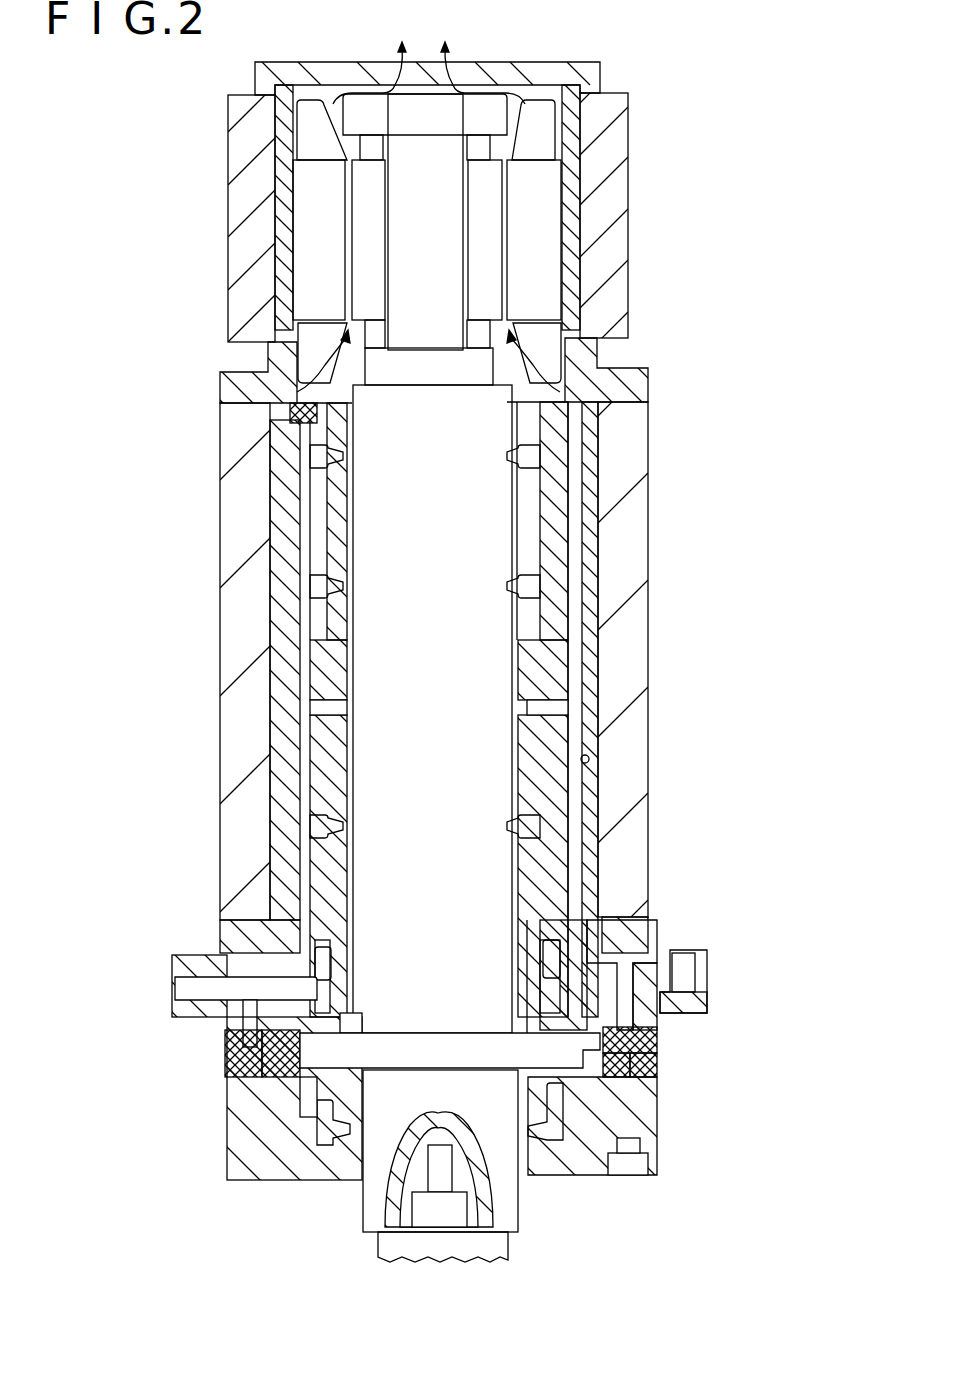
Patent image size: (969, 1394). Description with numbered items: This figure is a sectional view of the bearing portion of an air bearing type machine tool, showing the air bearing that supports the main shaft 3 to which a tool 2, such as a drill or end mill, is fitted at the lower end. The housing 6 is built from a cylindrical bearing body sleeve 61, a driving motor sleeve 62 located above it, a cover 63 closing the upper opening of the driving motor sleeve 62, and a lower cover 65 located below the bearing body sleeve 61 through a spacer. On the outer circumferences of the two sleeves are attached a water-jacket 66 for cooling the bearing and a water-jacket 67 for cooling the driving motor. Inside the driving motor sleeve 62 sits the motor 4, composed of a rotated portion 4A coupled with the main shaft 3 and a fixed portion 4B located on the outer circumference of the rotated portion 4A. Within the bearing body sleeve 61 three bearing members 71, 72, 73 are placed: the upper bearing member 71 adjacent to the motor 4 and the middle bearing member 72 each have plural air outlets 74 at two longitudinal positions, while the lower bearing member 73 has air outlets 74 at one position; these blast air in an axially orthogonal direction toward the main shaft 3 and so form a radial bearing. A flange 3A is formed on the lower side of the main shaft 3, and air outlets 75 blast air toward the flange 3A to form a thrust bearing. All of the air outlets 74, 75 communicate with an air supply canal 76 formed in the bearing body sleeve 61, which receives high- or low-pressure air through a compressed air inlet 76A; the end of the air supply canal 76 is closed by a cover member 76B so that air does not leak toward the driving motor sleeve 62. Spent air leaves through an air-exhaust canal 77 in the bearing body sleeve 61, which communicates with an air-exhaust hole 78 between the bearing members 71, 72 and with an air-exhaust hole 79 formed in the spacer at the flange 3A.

The tool 2 is at (500, 1245).
The main shaft 3 is at (372, 1210).
The flange 3A is at (437, 1040).
The motor 4 is at (520, 239).
The rotated portion 4A is at (492, 225).
The fixed portion 4B is at (548, 143).
The housing 6 is at (708, 968).
The bearing body sleeve 61 is at (592, 672).
The driving motor sleeve 62 is at (612, 378).
The cover 63 is at (265, 80).
The cover 65 is at (242, 1170).
The water-jacket for cooling the bearing 66 is at (638, 738).
The water-jacket for cooling the driving motor 67 is at (622, 127).
The bearing member 71 is at (536, 550).
The bearing member 72 is at (535, 858).
The bearing member 73 is at (597, 1103).
The air outlets 74 is at (520, 452).
The air outlets 75 is at (243, 1052).
The air supply canal 76 is at (300, 727).
The compressed air inlet 76A is at (172, 972).
The cover member 76B is at (288, 410).
The air-exhaust canal 77 is at (589, 758).
The air-exhaust hole 78 is at (540, 708).
The air-exhaust hole 79 is at (620, 1055).